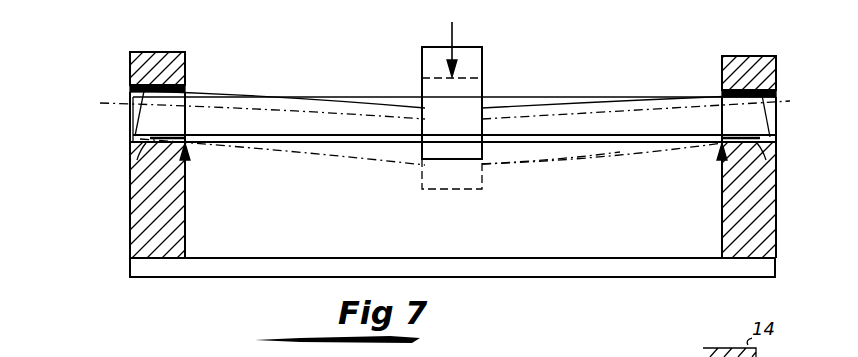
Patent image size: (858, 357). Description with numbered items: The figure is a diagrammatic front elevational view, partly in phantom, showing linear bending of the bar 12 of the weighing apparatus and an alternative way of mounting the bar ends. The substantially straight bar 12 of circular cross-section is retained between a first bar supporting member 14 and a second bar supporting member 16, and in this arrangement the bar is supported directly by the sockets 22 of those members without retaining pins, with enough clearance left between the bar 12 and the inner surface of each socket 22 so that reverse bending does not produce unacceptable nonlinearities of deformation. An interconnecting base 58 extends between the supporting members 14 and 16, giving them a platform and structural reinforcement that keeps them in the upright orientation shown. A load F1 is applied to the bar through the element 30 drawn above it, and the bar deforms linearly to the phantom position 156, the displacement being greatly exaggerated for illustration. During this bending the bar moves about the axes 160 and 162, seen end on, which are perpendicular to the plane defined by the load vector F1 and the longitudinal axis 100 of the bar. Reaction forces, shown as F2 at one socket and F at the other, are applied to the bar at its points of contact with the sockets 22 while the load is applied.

The bar 12 is at (541, 97).
The first bar supporting member 14 is at (151, 52).
The second bar supporting member 16 is at (741, 56).
The socket 22 is at (130, 172).
The load block 30 is at (422, 52).
The interconnecting base 58 is at (437, 266).
The longitudinal axis 100 is at (793, 103).
The position 156 is at (522, 164).
The axis 160 is at (185, 141).
The axis 162 is at (722, 141).
The load F1 is at (452, 22).
The reaction force F2 is at (190, 152).
The right reaction force F is at (716, 152).